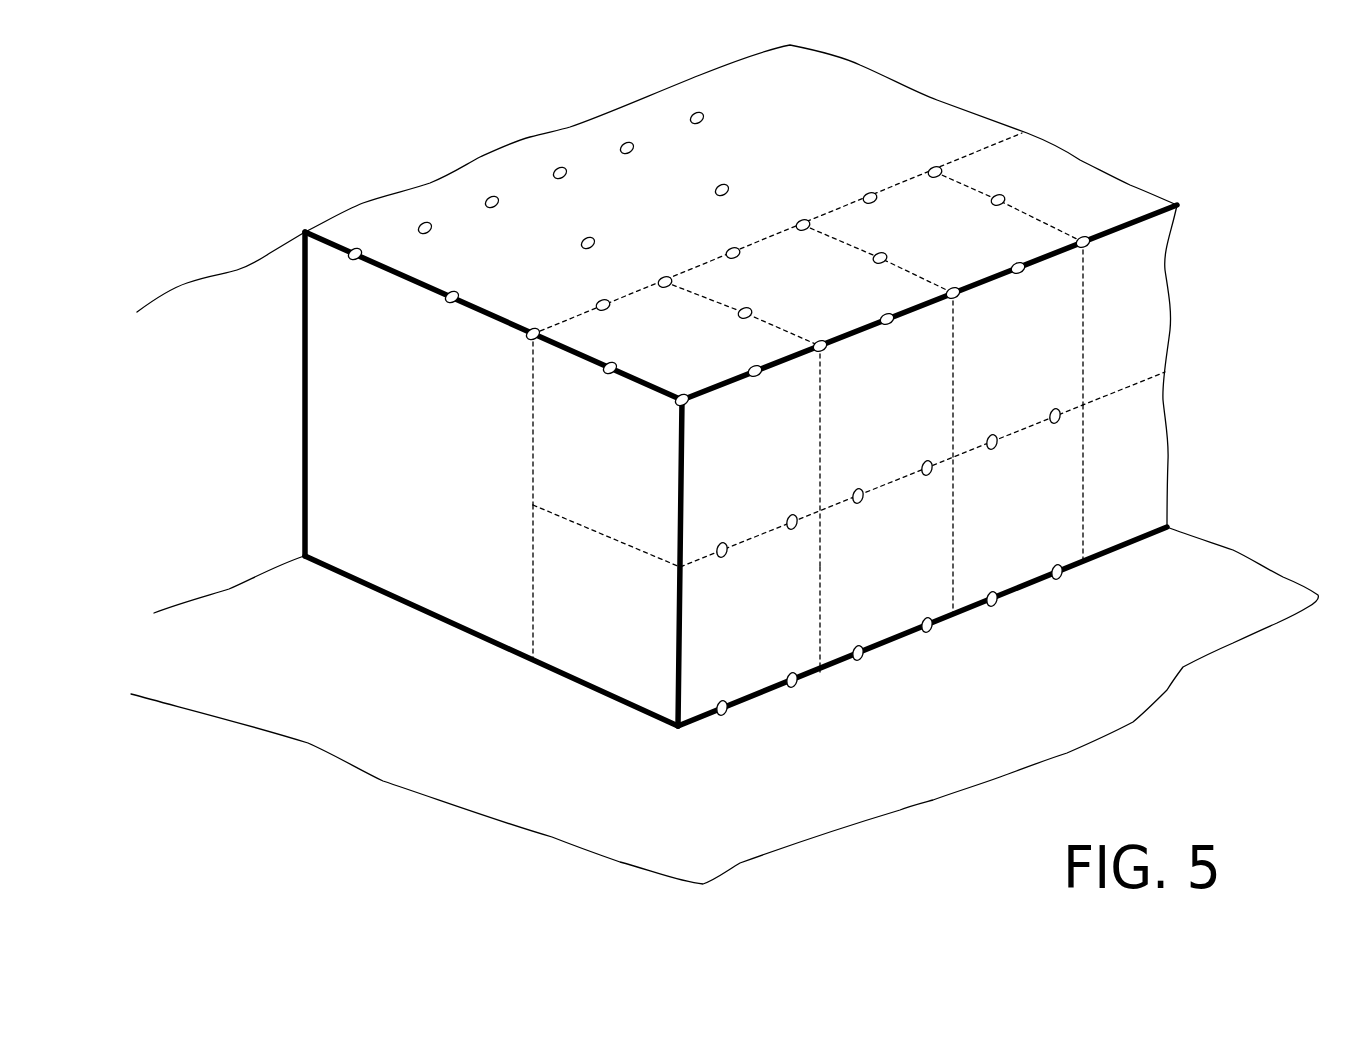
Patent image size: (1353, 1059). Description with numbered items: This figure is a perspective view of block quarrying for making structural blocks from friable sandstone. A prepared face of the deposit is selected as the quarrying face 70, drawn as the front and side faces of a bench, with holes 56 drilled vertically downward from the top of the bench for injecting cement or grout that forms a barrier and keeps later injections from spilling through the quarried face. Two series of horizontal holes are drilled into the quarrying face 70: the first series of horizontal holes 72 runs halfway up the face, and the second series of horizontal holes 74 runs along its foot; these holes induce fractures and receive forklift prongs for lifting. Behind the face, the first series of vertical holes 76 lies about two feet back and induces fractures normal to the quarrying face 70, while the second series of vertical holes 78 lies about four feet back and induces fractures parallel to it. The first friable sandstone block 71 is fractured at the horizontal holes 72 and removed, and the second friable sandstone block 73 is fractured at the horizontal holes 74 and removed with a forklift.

The holes 56 is at (347, 262).
The quarrying face 70 is at (1140, 315).
The first friable sandstone block 71 is at (737, 417).
The first series of horizontal holes 72 is at (724, 542).
The second friable sandstone block 73 is at (745, 582).
The second series of horizontal holes 74 is at (724, 700).
The first series of vertical holes 76 is at (751, 309).
The second series of vertical holes 78 is at (606, 298).